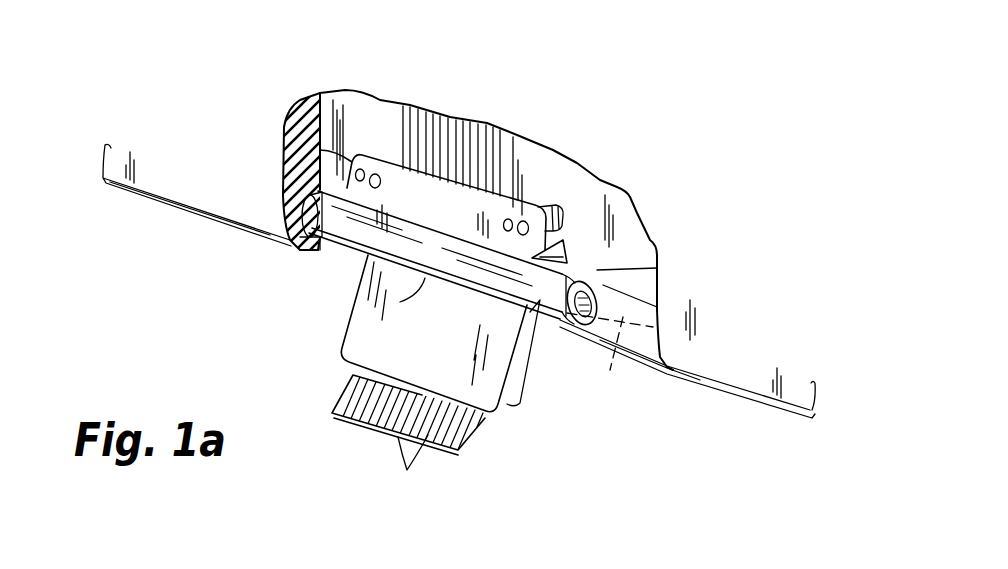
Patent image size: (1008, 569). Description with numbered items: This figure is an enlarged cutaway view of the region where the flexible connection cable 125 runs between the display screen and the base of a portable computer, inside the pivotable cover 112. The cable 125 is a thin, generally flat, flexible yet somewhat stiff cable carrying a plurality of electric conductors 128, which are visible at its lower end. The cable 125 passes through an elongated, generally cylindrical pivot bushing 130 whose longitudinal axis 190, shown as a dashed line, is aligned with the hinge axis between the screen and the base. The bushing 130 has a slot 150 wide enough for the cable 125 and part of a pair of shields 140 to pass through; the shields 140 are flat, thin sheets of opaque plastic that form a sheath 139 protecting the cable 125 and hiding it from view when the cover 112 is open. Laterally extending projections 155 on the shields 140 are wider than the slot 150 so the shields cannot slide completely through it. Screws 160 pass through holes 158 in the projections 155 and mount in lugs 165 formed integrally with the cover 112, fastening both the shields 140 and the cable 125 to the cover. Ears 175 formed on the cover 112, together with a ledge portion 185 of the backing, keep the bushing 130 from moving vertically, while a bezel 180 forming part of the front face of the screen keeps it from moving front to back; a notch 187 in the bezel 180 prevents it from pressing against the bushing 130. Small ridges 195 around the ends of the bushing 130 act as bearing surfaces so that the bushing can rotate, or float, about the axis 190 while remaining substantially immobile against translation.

The pivotable cover 112 is at (142, 202).
The flexible connection cable 125 is at (477, 420).
The electric conductors 128 is at (406, 469).
The pivot bushing 130 is at (338, 247).
The sheath 139 is at (337, 350).
The shields 140 is at (521, 374).
The slot 150 is at (400, 302).
The laterally extending projections 155 is at (352, 160).
The holes 158 is at (282, 157).
The screws 160 is at (360, 172).
The mounting lugs 165 is at (562, 213).
The ears 175 is at (284, 127).
The bezel 180 is at (197, 200).
The ledge portion 185 is at (657, 362).
The notch 187 is at (302, 212).
The longitudinal axis 190 is at (610, 356).
The small ridges 195 is at (565, 257).